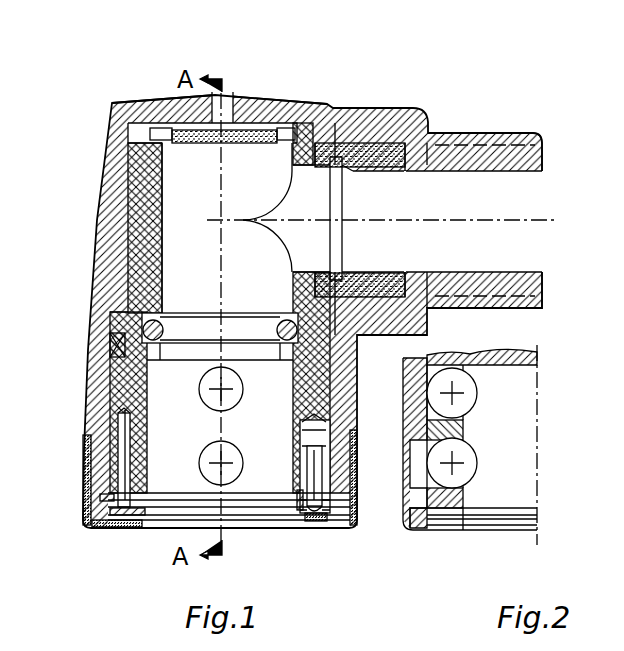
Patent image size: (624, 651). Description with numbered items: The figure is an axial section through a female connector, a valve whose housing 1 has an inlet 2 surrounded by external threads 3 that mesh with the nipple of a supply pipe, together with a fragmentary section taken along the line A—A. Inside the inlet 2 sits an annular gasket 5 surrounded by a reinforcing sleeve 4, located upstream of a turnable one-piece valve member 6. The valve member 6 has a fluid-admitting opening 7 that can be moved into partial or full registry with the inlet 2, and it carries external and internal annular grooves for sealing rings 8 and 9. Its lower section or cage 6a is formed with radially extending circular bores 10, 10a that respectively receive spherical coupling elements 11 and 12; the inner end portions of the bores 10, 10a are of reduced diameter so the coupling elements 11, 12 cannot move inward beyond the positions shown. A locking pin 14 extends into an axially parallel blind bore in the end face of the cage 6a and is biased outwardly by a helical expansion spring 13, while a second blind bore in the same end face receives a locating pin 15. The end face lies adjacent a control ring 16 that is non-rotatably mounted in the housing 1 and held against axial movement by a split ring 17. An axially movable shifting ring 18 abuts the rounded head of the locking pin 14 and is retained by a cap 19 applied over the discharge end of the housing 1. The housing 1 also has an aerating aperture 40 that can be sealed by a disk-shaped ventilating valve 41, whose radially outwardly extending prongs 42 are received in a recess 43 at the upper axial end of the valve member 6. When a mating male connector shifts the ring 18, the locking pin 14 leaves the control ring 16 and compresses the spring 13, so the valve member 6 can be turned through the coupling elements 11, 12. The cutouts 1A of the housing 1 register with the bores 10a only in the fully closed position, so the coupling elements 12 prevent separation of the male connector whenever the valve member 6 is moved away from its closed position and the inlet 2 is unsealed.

In FIG. 1, the housing 1 is at (105, 240).
In FIG. 2, the cutouts 1A is at (411, 453).
In FIG. 1, the inlet 2 is at (470, 180).
In FIG. 1, the external threads 3 is at (447, 133).
In FIG. 1, the reinforcing sleeve 4 is at (397, 117).
In FIG. 1, the annular gasket 5 is at (358, 125).
In FIG. 1, the valve member 6 is at (130, 202).
In FIG. 1, the cage 6a is at (115, 443).
In FIG. 1, the fluid-admitting opening 7 is at (332, 108).
In FIG. 1, the sealing ring 8 is at (110, 340).
In FIG. 1, the sealing ring 9 is at (128, 307).
In FIG. 1, the circular bore 10 is at (203, 390).
In FIG. 1, the circular bore 10a is at (200, 470).
In FIG. 2, the spherical coupling element 11 is at (463, 387).
In FIG. 2, the spherical coupling element 12 is at (463, 452).
In FIG. 1, the helical expansion spring 13 is at (302, 483).
In FIG. 1, the locking pin 14 is at (303, 522).
In FIG. 1, the locating pin 15 is at (123, 417).
In FIG. 1, the control ring 16 is at (112, 496).
In FIG. 1, the split ring 17 is at (85, 515).
In FIG. 1, the shifting ring 18 is at (322, 528).
In FIG. 1, the cap 19 is at (103, 527).
In FIG. 1, the aerating aperture 40 is at (230, 103).
In FIG. 1, the ventilating valve 41 is at (288, 112).
In FIG. 1, the prongs 42 is at (157, 133).
In FIG. 1, the recess 43 is at (110, 103).